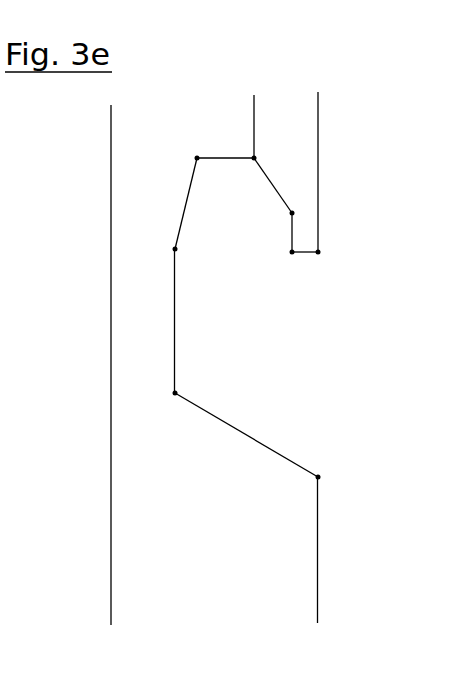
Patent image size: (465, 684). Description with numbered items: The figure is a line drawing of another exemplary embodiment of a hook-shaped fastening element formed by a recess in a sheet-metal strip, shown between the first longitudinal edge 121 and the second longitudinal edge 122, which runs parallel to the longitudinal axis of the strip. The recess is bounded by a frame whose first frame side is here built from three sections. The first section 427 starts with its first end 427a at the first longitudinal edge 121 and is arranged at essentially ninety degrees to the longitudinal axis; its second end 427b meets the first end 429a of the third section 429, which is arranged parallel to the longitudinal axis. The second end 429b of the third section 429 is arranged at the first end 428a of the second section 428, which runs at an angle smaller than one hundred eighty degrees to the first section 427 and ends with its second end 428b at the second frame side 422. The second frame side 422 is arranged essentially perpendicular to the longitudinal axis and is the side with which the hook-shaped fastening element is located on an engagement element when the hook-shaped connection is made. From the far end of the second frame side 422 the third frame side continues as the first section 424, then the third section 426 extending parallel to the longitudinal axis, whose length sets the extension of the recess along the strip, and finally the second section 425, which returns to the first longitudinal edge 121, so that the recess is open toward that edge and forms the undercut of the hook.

The first longitudinal edge 121 is at (316, 563).
The second longitudinal edge 122 is at (111, 613).
The second frame side 422 is at (218, 158).
The first section of the third frame side 424 is at (178, 208).
The second section of the third frame side 425 is at (243, 437).
The third section of the third frame side 426 is at (174, 318).
The first section of the first frame side 427 is at (305, 254).
The first end of the first section 427a is at (318, 252).
The second end of the first section 427b is at (247, 302).
The second section of the first frame side 428 is at (270, 180).
The first end of the second section 428a is at (296, 206).
The second end of the second section 428b is at (259, 102).
The third section of the first frame side 429 is at (291, 232).
The first end of the third section 429a is at (291, 256).
The second end of the third section 429b is at (355, 172).